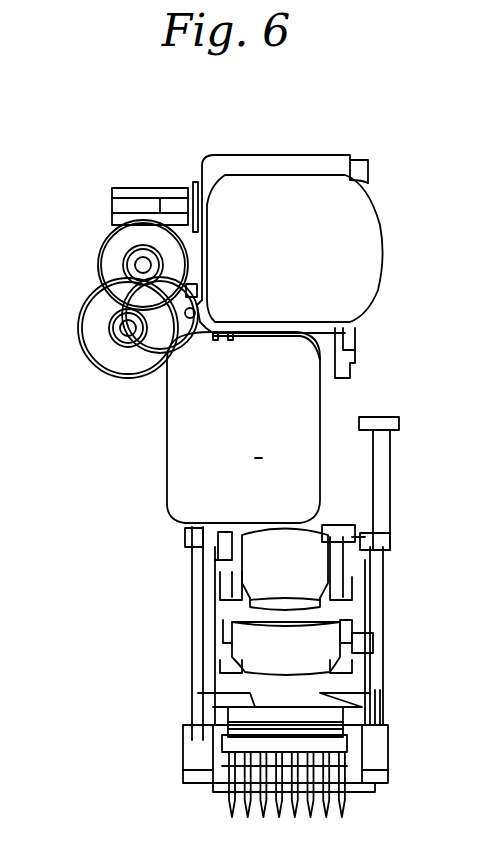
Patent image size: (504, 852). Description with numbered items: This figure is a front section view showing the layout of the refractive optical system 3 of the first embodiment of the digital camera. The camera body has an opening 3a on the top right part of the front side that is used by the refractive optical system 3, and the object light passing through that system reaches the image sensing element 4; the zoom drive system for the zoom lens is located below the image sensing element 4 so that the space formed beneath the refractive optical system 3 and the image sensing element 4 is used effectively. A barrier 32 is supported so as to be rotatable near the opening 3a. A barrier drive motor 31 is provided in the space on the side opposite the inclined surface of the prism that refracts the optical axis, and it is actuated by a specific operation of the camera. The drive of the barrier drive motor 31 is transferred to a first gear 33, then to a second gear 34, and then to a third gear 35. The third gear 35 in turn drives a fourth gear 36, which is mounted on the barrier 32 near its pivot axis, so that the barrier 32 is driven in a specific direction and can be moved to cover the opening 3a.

The refractive optical system 3 is at (358, 477).
The opening 3a is at (368, 257).
The image sensing element 4 is at (337, 742).
The barrier drive motor 31 is at (203, 160).
The barrier 32 is at (166, 453).
The first gear 33 is at (130, 192).
The second gear 34 is at (98, 258).
The third gear 35 is at (96, 350).
The fourth gear 36 is at (157, 366).